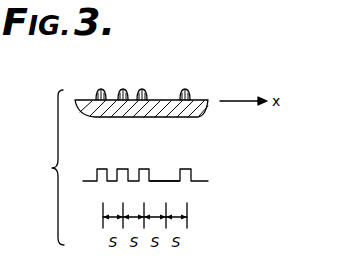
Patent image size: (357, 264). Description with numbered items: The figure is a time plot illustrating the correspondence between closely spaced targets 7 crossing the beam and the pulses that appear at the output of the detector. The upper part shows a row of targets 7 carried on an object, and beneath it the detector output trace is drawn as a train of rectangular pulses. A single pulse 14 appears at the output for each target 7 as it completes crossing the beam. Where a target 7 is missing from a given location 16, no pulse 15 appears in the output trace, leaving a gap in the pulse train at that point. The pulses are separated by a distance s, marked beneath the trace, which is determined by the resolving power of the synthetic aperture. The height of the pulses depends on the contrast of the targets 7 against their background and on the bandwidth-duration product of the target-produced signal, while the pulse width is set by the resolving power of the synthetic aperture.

The target 7 is at (141, 89).
The location 16 is at (162, 100).
The pulse 14 is at (101, 169).
The missing pulse 15 is at (170, 181).